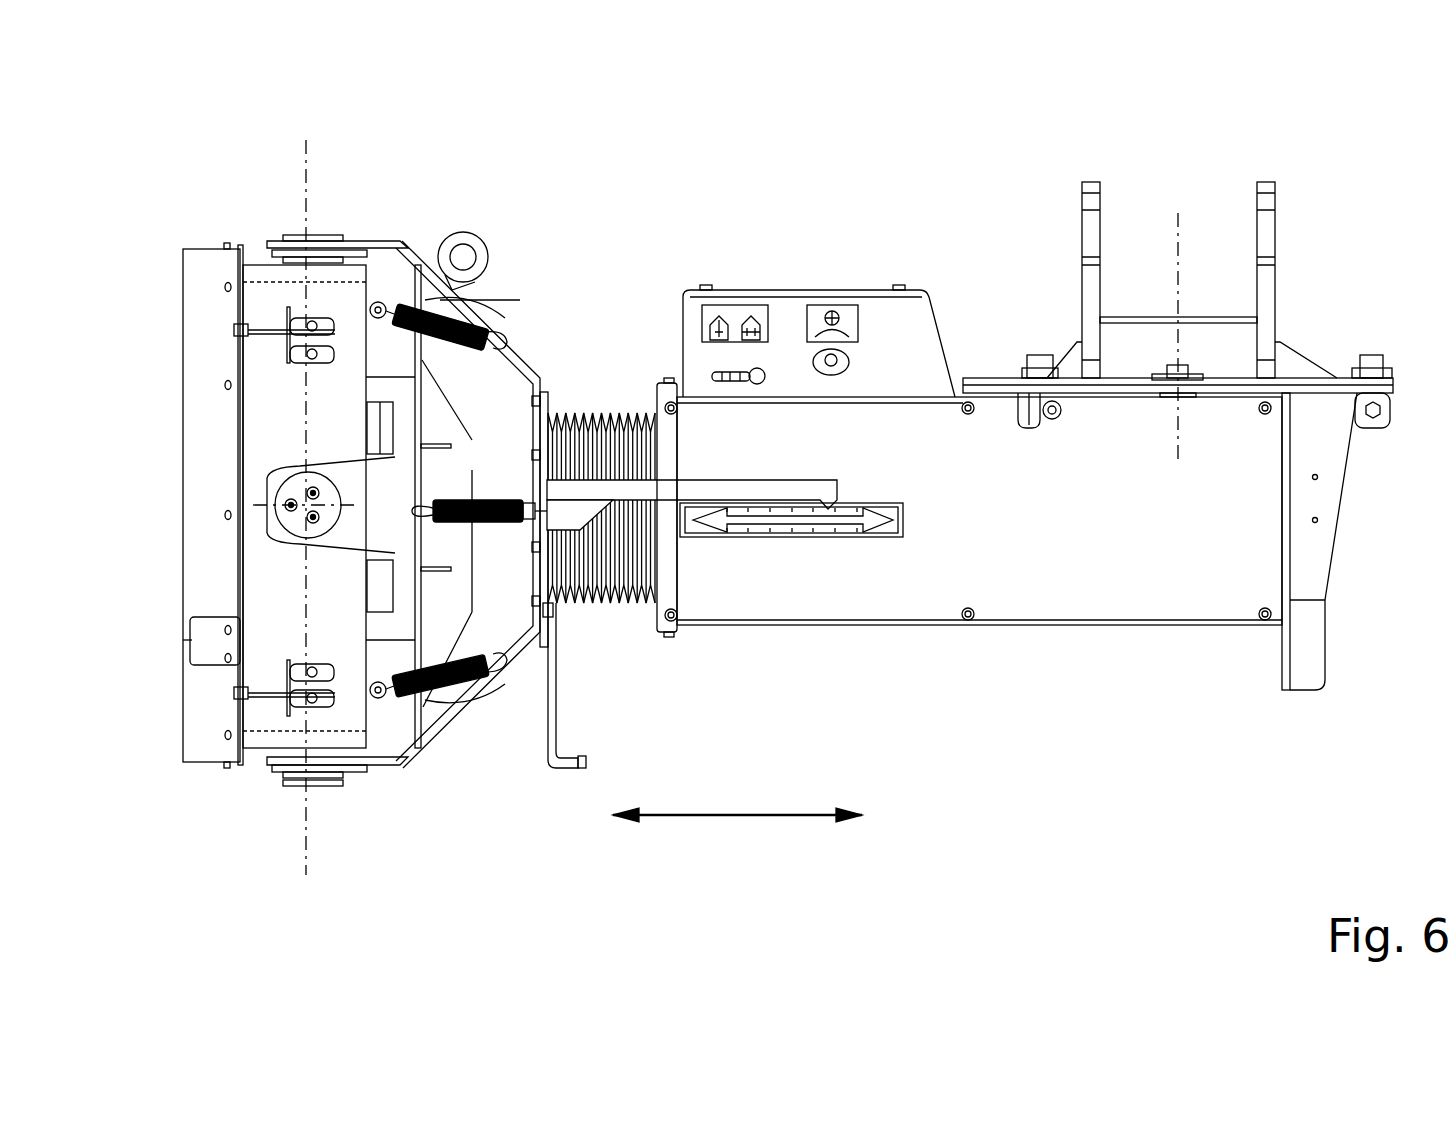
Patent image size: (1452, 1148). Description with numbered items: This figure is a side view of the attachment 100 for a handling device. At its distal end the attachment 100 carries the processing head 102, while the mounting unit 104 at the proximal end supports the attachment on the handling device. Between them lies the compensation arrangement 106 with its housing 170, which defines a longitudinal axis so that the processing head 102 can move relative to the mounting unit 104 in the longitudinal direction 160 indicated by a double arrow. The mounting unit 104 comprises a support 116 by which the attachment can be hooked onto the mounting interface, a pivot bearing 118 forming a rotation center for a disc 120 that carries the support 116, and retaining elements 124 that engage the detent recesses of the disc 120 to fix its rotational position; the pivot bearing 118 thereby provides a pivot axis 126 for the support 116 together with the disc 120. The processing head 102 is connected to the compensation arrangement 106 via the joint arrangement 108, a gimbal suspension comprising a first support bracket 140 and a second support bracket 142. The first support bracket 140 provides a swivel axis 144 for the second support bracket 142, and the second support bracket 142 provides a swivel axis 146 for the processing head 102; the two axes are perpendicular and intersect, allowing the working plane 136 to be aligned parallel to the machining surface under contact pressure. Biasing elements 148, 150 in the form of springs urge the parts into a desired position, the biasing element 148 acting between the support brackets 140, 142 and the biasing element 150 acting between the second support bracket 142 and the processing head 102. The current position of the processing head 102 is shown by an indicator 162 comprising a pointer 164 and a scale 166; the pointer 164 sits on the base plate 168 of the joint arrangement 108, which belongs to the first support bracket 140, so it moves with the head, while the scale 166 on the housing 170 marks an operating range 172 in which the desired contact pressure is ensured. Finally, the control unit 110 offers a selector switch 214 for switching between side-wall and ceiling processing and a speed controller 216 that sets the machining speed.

The attachment 100 is at (1052, 803).
The processing head 102 is at (237, 795).
The mounting unit 104 is at (1046, 228).
The compensation arrangement 106 is at (1177, 640).
The joint arrangement 108 is at (413, 818).
The control unit 110 is at (812, 270).
The support 116 is at (1270, 243).
The pivot bearing 118 is at (1172, 365).
The disc 120 is at (1293, 380).
The retaining elements 124 is at (1020, 380).
The pivot axis 126 is at (1178, 290).
The working plane 136 is at (181, 392).
The first support bracket 140 is at (447, 727).
The second support bracket 142 is at (450, 460).
The swivel axis 144 is at (310, 187).
The swivel axis 146 is at (278, 490).
The biasing element 148 is at (490, 500).
The biasing element 150 is at (510, 262).
The longitudinal direction 160 is at (733, 815).
The indicator 162 is at (788, 556).
The pointer 164 is at (680, 530).
The scale 166 is at (873, 520).
The base plate 168 is at (547, 598).
The housing 170 is at (942, 578).
The operating range 172 is at (680, 503).
The selector switch 214 is at (712, 374).
The speed controller 216 is at (849, 358).